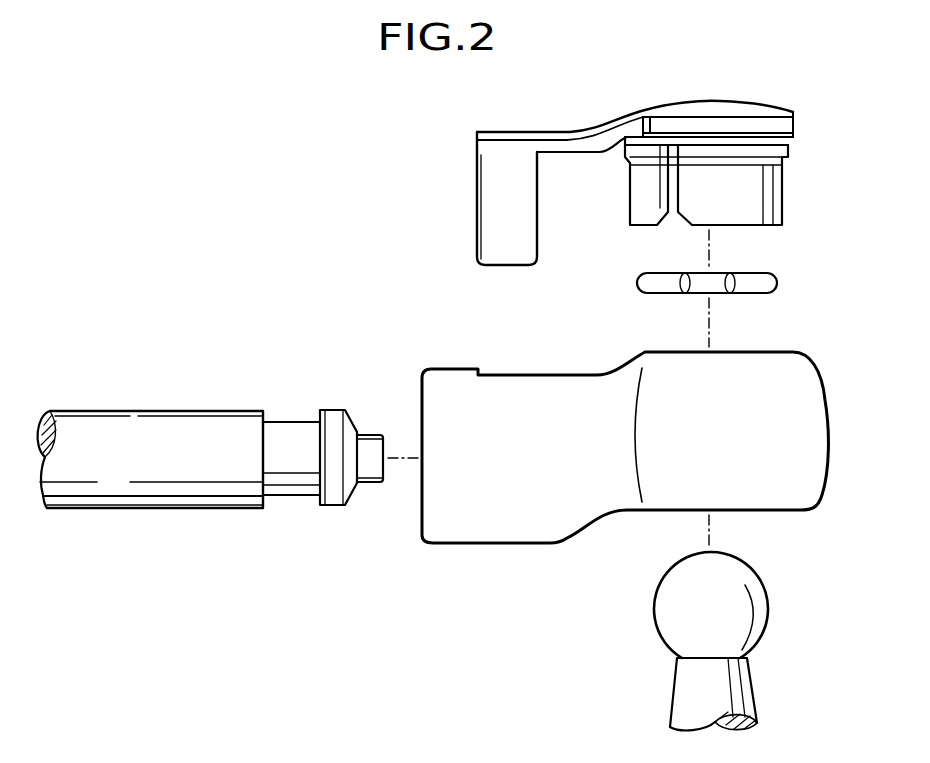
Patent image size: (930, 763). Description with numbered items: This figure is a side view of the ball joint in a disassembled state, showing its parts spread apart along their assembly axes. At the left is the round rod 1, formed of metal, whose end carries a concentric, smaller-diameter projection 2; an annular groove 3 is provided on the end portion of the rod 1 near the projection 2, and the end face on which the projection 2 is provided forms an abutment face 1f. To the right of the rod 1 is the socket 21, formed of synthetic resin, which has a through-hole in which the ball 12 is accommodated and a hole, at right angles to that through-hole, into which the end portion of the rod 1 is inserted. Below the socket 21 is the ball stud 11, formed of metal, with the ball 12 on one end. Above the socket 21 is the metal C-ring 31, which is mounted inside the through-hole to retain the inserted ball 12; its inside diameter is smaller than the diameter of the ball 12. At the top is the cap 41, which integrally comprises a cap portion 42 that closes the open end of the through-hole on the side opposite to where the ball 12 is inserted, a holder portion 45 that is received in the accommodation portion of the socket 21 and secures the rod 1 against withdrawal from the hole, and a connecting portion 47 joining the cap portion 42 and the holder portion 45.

The round rod 1 is at (213, 492).
The abutment face 1f is at (358, 422).
The projection 2 is at (368, 475).
The annular groove 3 is at (293, 487).
The ball stud 11 is at (738, 700).
The ball 12 is at (750, 608).
The socket 21 is at (808, 428).
The C-ring 31 is at (770, 283).
The cap 41 is at (709, 131).
The cap portion 42 is at (749, 124).
The holder portion 45 is at (496, 187).
The connecting portion 47 is at (574, 133).